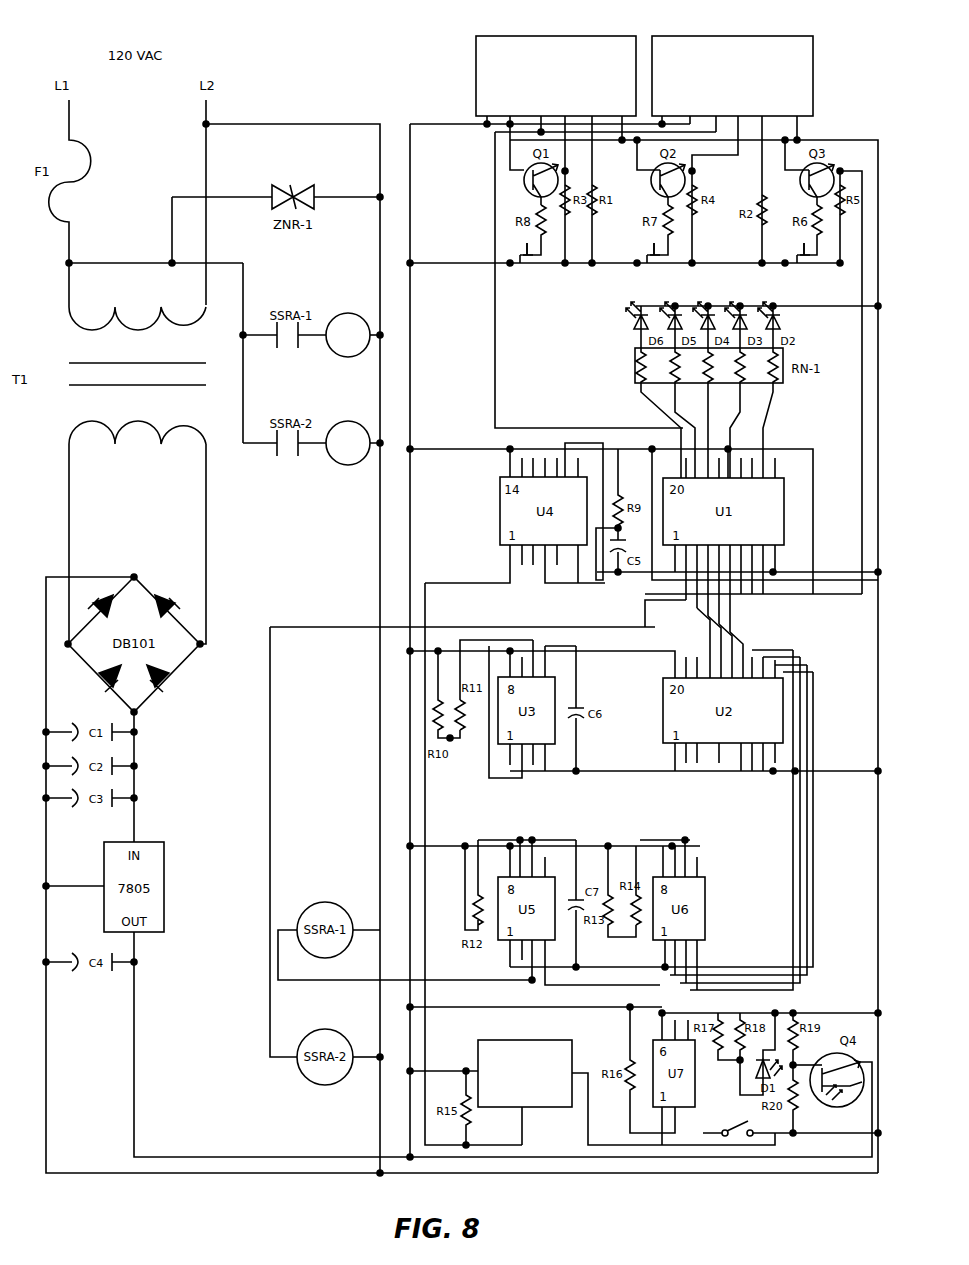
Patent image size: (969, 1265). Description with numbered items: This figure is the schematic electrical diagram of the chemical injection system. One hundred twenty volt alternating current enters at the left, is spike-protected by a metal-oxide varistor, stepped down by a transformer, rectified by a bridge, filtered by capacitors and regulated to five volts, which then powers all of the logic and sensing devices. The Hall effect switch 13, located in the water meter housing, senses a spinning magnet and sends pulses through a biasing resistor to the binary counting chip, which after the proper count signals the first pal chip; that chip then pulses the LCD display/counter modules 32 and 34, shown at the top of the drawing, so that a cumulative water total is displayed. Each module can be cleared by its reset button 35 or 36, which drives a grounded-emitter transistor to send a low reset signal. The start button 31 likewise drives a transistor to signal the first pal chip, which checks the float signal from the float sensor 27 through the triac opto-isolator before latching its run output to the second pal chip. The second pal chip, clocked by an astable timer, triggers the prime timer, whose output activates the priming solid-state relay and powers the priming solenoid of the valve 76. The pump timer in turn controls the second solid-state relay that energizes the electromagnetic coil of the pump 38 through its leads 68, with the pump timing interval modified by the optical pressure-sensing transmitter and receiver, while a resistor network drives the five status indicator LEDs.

The LCD display/counter module 32 is at (565, 36).
The LCD display/counter module 34 is at (722, 36).
The reset button 35 is at (520, 246).
The reset button 36 is at (652, 248).
The start button 31 is at (802, 248).
The valve 76 is at (357, 357).
The leads 68 is at (312, 446).
The pump 38 is at (350, 464).
The Hall effect switch 13 is at (536, 1040).
The float sensor 27 is at (722, 1131).